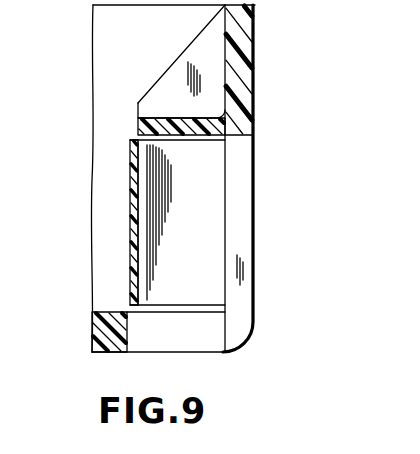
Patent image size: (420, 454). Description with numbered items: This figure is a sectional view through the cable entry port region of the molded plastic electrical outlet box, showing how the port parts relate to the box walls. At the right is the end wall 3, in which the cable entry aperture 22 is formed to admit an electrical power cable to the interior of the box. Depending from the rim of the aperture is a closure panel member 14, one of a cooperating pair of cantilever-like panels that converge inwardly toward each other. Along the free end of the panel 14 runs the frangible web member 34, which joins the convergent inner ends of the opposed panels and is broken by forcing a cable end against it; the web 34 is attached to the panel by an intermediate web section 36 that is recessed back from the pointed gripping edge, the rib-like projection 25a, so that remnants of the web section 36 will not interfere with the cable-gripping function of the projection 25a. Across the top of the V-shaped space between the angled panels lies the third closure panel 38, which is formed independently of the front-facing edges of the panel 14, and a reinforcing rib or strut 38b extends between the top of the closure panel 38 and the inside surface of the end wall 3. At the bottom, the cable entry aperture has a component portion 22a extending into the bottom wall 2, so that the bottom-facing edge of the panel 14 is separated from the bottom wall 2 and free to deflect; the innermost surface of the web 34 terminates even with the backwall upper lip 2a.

The bottom wall 2 is at (103, 341).
The backwall upper lip 2a is at (129, 339).
The end wall 3 is at (245, 43).
The closure panel member 14 is at (212, 258).
The cable entry aperture 22 is at (253, 208).
The aperture component portion 22a is at (202, 338).
The rib-like projection 25a is at (143, 172).
The frangible web member 34 is at (143, 228).
The intermediate web section 36 is at (143, 197).
The third closure panel 38 is at (139, 125).
The reinforcing rib or strut 38b is at (183, 74).